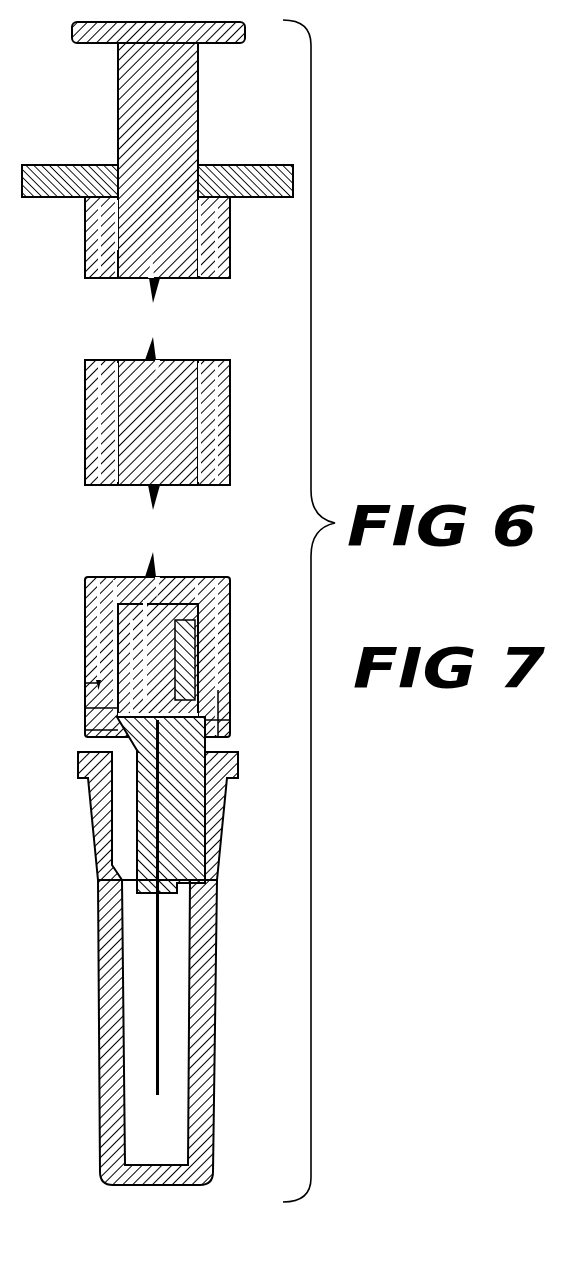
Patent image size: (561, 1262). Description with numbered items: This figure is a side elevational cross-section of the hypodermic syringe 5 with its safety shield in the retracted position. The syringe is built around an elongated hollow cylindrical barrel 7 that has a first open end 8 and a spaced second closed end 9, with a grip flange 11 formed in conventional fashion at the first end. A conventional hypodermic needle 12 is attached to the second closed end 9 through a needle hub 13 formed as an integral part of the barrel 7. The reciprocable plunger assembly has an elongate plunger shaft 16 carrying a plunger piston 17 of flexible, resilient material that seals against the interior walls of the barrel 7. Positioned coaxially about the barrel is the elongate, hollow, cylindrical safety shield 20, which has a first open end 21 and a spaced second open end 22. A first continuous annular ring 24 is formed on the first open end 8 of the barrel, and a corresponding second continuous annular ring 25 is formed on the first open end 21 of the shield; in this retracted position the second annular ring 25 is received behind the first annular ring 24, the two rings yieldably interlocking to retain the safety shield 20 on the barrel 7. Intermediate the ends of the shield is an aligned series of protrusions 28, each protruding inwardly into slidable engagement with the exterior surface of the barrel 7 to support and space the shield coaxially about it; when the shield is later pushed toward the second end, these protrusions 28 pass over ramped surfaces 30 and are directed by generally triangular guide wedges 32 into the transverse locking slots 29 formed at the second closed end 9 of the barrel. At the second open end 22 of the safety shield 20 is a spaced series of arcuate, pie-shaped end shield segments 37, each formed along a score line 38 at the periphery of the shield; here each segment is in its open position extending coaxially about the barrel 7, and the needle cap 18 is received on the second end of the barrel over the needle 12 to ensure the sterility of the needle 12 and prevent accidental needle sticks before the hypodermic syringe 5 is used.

The hypodermic syringe 5 is at (72, 553).
The barrel 7 is at (205, 360).
The first open end 8 is at (228, 165).
The second closed end 9 is at (218, 700).
The grip flange 11 is at (85, 165).
The hypodermic needle 12 is at (162, 1005).
The needle hub 13 is at (190, 870).
The plunger shaft 16 is at (199, 63).
The plunger piston 17 is at (205, 625).
The needle cap 18 is at (215, 1118).
The safety shield 20 is at (232, 410).
The first open end 21 is at (232, 253).
The second open end 22 is at (218, 728).
The first continuous annular ring 24 is at (120, 253).
The second continuous annular ring 25 is at (85, 228).
The protrusions 28 is at (85, 418).
The locking slots 29 is at (88, 708).
The ramped surface 30 is at (88, 683).
The guide wedges 32 is at (208, 660).
The end shield segments 37 is at (90, 735).
The score line 38 is at (90, 665).